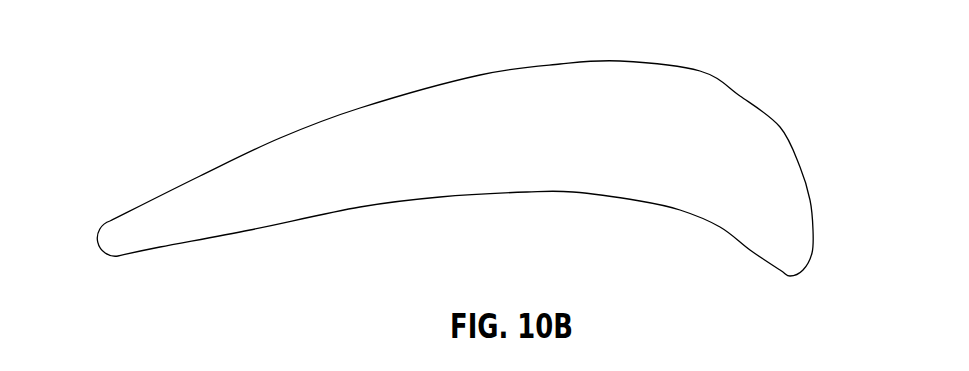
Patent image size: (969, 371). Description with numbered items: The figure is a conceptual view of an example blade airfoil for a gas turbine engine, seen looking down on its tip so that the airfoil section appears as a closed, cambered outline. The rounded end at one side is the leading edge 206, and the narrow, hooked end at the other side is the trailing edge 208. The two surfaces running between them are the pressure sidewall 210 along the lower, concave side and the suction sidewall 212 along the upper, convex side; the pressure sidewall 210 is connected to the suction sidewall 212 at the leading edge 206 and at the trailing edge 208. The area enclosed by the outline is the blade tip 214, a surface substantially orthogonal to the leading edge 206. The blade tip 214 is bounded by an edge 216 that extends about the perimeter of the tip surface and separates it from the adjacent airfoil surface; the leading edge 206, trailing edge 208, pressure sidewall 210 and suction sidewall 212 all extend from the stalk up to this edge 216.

The leading edge 206 is at (464, 141).
The trailing edge 208 is at (90, 218).
The pressure sidewall 210 is at (480, 215).
The suction sidewall 212 is at (357, 80).
The blade tip 214 is at (536, 151).
The edge 216 is at (528, 68).